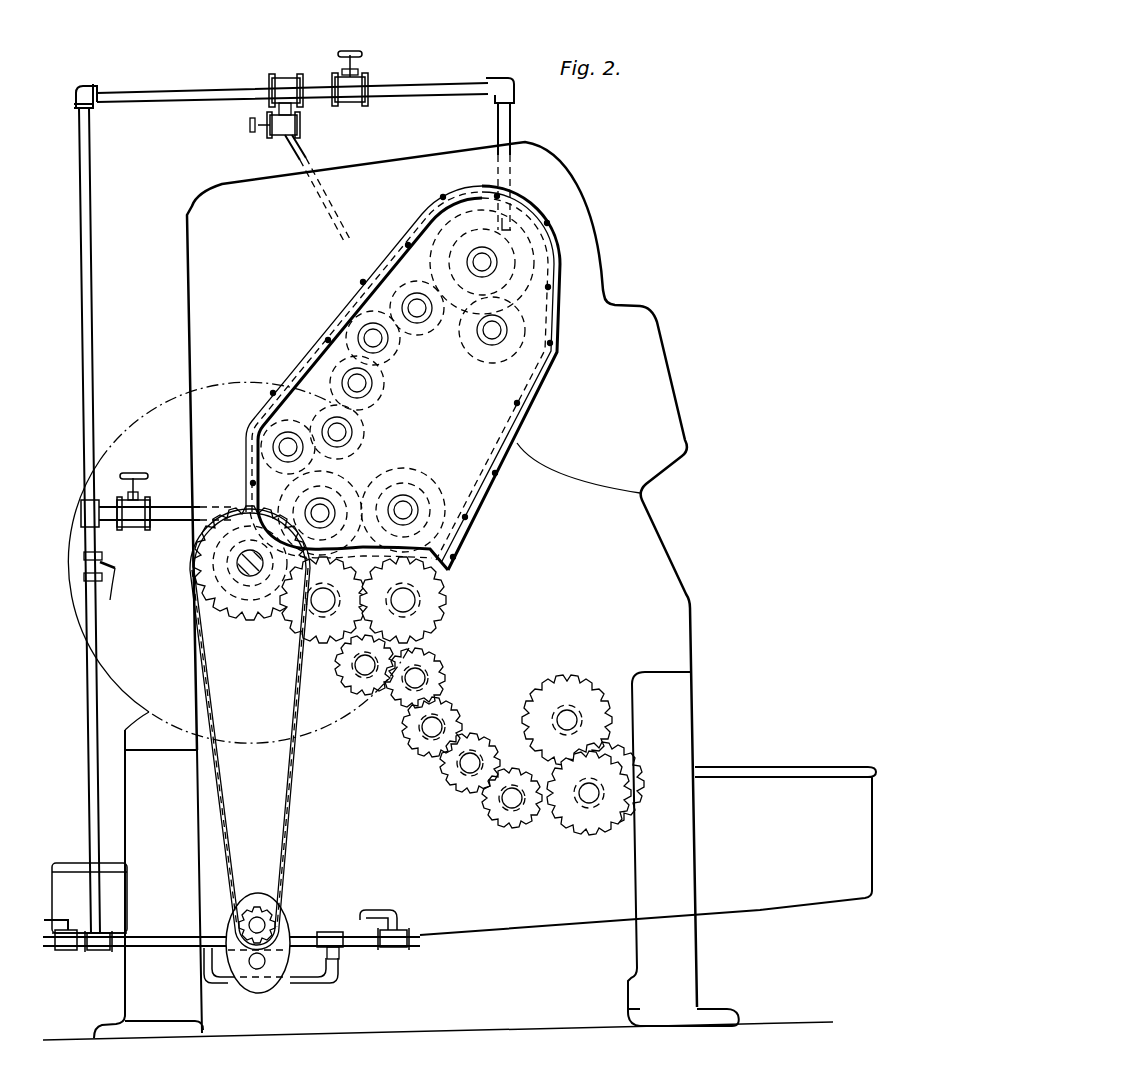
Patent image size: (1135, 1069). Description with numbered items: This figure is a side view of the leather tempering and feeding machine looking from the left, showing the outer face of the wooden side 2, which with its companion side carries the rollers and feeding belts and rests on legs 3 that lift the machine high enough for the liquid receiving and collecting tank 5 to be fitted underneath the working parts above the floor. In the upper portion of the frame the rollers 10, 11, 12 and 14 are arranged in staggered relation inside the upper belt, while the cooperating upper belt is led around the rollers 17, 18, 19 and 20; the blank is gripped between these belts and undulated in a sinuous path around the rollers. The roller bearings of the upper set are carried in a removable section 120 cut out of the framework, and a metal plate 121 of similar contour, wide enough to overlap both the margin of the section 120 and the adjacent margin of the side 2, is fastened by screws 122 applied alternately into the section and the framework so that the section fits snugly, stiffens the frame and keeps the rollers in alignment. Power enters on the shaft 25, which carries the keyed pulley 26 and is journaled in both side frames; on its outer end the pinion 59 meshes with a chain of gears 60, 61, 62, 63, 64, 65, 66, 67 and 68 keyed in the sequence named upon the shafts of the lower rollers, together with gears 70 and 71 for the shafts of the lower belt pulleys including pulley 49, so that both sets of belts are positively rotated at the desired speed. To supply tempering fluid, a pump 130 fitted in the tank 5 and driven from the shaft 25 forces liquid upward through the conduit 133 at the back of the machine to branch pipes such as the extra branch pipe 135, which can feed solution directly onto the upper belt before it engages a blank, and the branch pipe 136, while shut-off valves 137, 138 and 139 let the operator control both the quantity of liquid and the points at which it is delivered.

The wooden side 2 is at (654, 392).
The legs 3 is at (190, 1010).
The liquid receiving and collecting reservoir or tank 5 is at (790, 900).
The roller 10 is at (486, 262).
The roller 11 is at (418, 318).
The roller 12 is at (358, 388).
The roller 14 is at (323, 507).
The roller 17 is at (493, 330).
The roller 18 is at (376, 342).
The roller 19 is at (340, 433).
The roller 20 is at (400, 513).
The shaft 25 is at (248, 563).
The keyed pulley 26 is at (150, 423).
The pulley 49 is at (300, 633).
The pinion 59 is at (245, 590).
The gear 60 is at (320, 640).
The gear 61 is at (370, 680).
The gear 62 is at (432, 661).
The gear 63 is at (447, 708).
The gear 64 is at (470, 745).
The gear 65 is at (492, 815).
The gear 66 is at (560, 825).
The gear 67 is at (600, 812).
The gear 68 is at (577, 692).
The gear 70 is at (323, 633).
The gear 71 is at (433, 587).
The removable section 120 is at (486, 394).
The metal plate 121 is at (277, 437).
The screws 122 is at (548, 225).
The pump 130 is at (293, 983).
The conduit 133 is at (96, 700).
The branch pipe 135 is at (287, 148).
The branch pipe 136 is at (513, 123).
The shut-off valve 137 is at (140, 472).
The shut-off valve 138 is at (353, 52).
The shut-off valve 139 is at (119, 589).